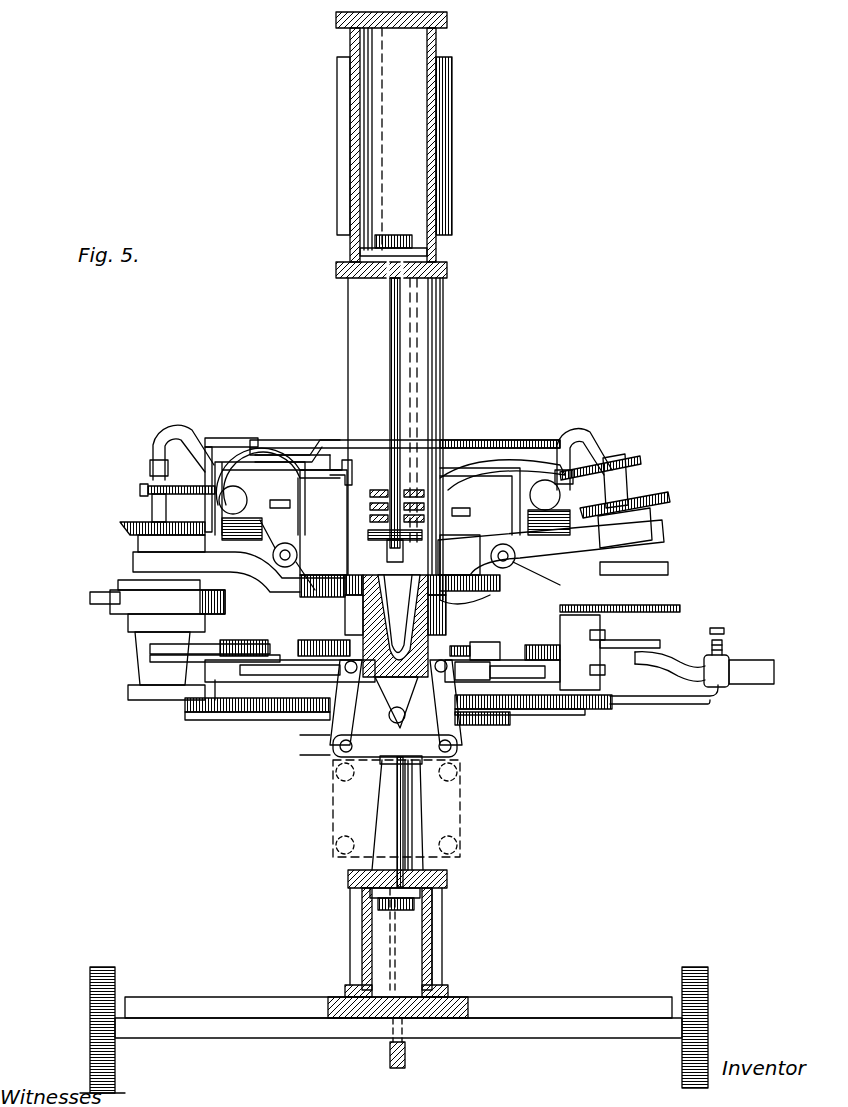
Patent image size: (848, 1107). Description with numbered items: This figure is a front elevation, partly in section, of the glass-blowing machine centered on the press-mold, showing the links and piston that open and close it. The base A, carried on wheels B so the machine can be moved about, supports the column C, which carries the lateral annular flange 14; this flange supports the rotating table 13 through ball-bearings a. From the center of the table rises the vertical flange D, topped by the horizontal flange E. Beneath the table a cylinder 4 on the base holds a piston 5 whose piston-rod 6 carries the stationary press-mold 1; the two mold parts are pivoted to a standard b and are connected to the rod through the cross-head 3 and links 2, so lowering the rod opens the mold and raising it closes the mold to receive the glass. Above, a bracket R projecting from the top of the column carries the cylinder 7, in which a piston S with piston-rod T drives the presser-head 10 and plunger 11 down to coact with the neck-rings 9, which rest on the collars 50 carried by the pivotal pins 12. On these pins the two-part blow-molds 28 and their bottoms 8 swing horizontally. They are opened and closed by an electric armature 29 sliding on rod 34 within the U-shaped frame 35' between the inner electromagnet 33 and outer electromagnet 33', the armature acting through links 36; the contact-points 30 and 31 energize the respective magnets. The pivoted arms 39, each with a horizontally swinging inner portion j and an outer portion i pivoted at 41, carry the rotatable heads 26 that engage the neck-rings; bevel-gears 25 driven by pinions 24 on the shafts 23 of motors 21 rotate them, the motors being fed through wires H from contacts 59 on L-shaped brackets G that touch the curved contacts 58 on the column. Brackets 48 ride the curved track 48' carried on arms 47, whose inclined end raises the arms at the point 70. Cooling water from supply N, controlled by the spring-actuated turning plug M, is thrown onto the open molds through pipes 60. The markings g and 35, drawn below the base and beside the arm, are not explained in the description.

The cylinder 7 is at (352, 140).
The bracket R is at (453, 125).
The piston S is at (388, 242).
The column C is at (440, 350).
The piston-rod T is at (390, 305).
The arms 47 is at (333, 455).
The curved track 48' is at (359, 452).
The curved electrical contacts 58 is at (368, 508).
The plunger 11 is at (378, 540).
The presser-head 10 is at (405, 548).
The vertical flange D is at (447, 640).
The brackets 48 is at (381, 462).
The point 70 is at (280, 440).
The wires H is at (250, 480).
The L-shaped brackets G is at (300, 470).
The electric motors 21 is at (240, 508).
The shafts 23 is at (262, 525).
The electric contacts 59 is at (373, 501).
The pivoted arms 39 is at (292, 548).
The pivot point 41 is at (284, 560).
The pinions 24 is at (150, 490).
The bevel-gears 25 is at (125, 527).
The outer portion of arm i is at (140, 555).
The inner portion of arm j is at (390, 522).
The plate g is at (336, 565).
The horizontal flange E is at (500, 585).
The press-mold 1 is at (473, 597).
The head 26 is at (118, 584).
The neck-rings 9 is at (120, 600).
The neck-ring-supporting collars 50 is at (130, 622).
The blow-molds 28 is at (135, 660).
The pivotal pins 12 is at (230, 648).
The links 36 is at (200, 680).
The outer electromagnet 33' is at (393, 636).
The inner electromagnet 33 is at (322, 634).
The electric armature 29 is at (240, 690).
The horizontal shaft or rod 34 is at (392, 665).
The U-shaped bracket or frame 35' is at (398, 716).
The contact-points 30 is at (210, 718).
The bottoms 8 is at (215, 690).
The contact-points 31 is at (290, 720).
The links 2 is at (380, 708).
The cross-head 3 is at (395, 717).
The lateral annular flange 14 is at (495, 725).
The ball-bearings a is at (520, 712).
The pipes 60 is at (648, 660).
The rotating table 13 is at (664, 689).
The supply N is at (755, 682).
The turning plug M is at (726, 640).
The piston-rod 6 is at (392, 800).
The standard b is at (406, 835).
The cylinder 4 is at (433, 932).
The piston 5 is at (408, 910).
The base A is at (270, 997).
The wheels B is at (110, 985).
The bolt 35 is at (372, 1049).